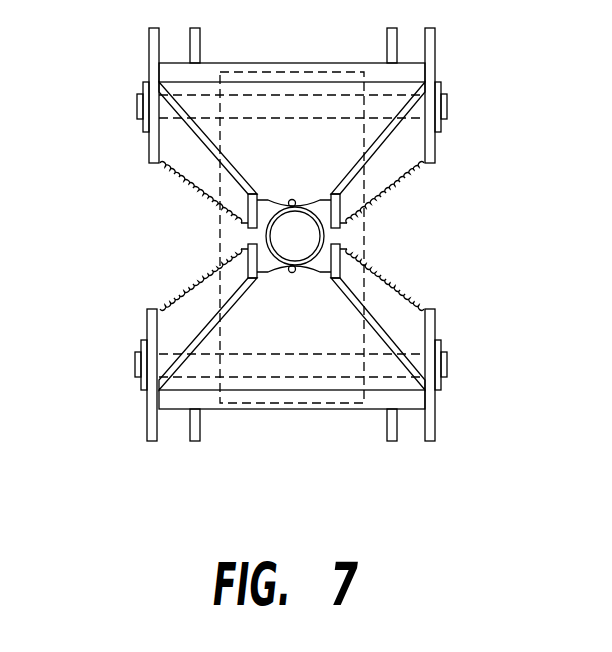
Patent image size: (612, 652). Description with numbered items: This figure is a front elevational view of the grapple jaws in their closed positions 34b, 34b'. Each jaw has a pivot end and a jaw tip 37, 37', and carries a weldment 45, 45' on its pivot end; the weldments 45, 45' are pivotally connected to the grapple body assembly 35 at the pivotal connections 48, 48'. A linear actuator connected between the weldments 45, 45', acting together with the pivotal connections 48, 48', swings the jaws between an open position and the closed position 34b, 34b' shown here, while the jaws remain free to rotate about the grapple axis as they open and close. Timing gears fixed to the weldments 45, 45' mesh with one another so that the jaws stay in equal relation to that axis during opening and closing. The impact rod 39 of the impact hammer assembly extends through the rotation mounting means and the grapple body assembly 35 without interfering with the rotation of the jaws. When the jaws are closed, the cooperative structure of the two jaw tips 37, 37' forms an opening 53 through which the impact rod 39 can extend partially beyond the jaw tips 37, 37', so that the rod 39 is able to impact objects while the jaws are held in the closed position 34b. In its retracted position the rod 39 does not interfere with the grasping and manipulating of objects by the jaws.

The grapple body assembly 35 is at (369, 220).
The weldment 45 is at (291, 95).
The weldment 45' is at (294, 376).
The pivotal connection 48 is at (258, 107).
The pivotal connection 48' is at (258, 365).
The closed position 34b is at (245, 196).
The lower serrated gripping surface 34b' is at (245, 279).
The jaw tip 37 is at (296, 178).
The jaw tip 37' is at (296, 295).
The opening 53 is at (290, 199).
The impact rod 39 is at (298, 237).